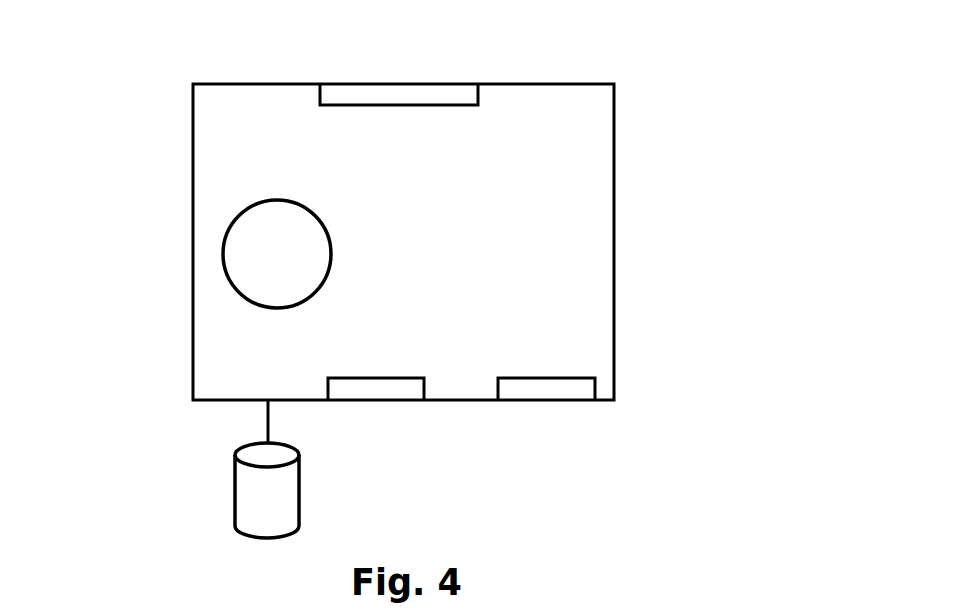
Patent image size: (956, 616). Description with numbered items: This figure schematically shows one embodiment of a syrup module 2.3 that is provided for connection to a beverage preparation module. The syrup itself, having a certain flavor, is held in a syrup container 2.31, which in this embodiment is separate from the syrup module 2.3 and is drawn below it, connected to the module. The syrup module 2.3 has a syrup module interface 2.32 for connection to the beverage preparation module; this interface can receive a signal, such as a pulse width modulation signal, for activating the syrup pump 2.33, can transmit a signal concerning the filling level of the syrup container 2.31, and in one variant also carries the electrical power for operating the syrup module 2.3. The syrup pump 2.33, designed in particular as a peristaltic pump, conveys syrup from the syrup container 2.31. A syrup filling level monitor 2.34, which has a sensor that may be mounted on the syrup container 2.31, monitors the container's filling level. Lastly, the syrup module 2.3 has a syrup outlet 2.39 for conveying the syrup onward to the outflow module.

The syrup module 2.3 is at (163, 87).
The syrup container 2.31 is at (257, 506).
The syrup module interface 2.32 is at (447, 95).
The syrup pump 2.33 is at (237, 253).
The syrup filling level monitor 2.34 is at (382, 390).
The syrup outlet 2.39 is at (552, 390).